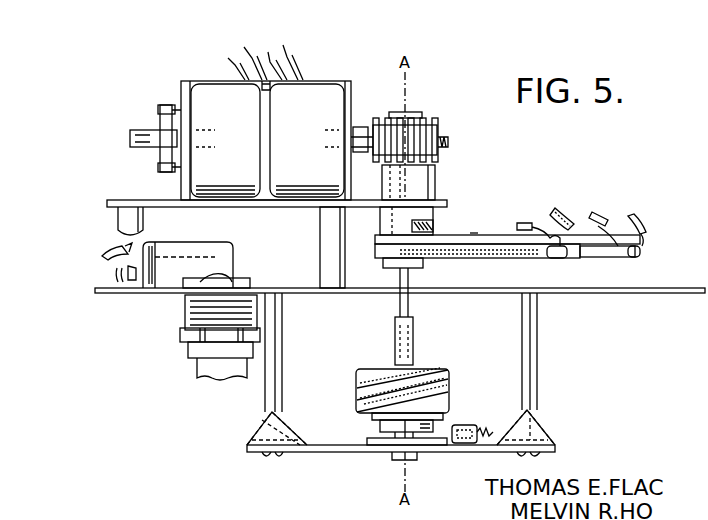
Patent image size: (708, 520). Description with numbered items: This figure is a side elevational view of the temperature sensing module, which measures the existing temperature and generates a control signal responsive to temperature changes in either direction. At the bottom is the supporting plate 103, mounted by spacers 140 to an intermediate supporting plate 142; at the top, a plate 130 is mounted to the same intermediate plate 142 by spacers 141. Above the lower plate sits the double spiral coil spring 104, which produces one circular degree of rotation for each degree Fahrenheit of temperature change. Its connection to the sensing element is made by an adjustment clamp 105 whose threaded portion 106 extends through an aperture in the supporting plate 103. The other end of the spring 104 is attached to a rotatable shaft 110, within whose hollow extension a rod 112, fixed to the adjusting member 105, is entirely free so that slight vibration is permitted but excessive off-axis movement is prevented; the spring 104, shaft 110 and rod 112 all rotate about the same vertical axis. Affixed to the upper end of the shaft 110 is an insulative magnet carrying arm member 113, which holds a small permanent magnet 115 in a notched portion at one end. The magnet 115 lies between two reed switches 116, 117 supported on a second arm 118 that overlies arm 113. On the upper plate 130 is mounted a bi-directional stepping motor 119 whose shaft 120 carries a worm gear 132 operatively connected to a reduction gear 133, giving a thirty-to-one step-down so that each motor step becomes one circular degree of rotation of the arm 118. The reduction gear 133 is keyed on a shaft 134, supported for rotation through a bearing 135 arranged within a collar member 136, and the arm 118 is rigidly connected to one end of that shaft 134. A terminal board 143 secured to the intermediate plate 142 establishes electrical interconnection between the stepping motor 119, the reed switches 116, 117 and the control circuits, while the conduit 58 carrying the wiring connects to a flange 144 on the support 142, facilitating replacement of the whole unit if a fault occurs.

The bi-directional stepping motor 119 is at (240, 122).
The shaft 120 is at (362, 127).
The worm gear 132 is at (424, 120).
The reduction gear 133 is at (446, 140).
The bearing 135 is at (418, 185).
The shaft 134 is at (390, 222).
The collar member 136 is at (432, 222).
The plate 130 is at (108, 201).
The spacers 141 is at (143, 220).
The magnet carrying arm member 113 is at (470, 252).
The second arm 118 is at (478, 234).
The reed switch 116 is at (553, 258).
The permanent magnet 115 is at (606, 257).
The reed switch 117 is at (641, 252).
The intermediate supporting plate 142 is at (485, 293).
The terminal board 143 is at (160, 274).
The flange 144 is at (187, 298).
The conduit 58 is at (205, 372).
The spacers 140 is at (282, 341).
The supporting plate 103 is at (318, 454).
The rotatable shaft 110 is at (412, 305).
The double spiral coil spring 104 is at (443, 379).
The rod 112 is at (385, 436).
The threaded portion 106 is at (398, 453).
The adjustment clamp 105 is at (465, 443).